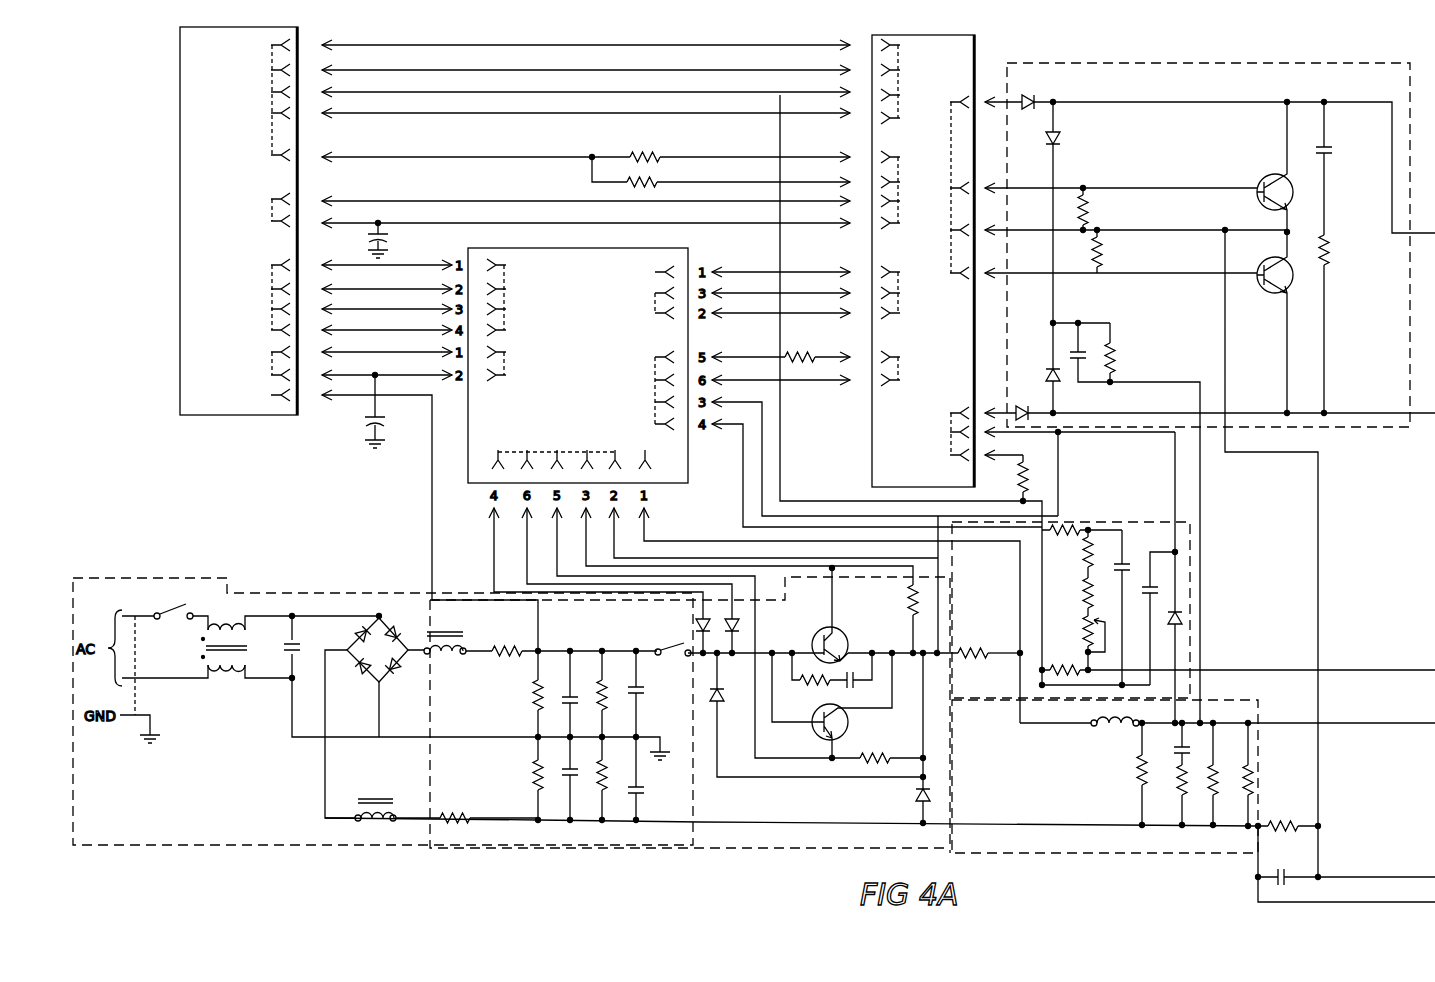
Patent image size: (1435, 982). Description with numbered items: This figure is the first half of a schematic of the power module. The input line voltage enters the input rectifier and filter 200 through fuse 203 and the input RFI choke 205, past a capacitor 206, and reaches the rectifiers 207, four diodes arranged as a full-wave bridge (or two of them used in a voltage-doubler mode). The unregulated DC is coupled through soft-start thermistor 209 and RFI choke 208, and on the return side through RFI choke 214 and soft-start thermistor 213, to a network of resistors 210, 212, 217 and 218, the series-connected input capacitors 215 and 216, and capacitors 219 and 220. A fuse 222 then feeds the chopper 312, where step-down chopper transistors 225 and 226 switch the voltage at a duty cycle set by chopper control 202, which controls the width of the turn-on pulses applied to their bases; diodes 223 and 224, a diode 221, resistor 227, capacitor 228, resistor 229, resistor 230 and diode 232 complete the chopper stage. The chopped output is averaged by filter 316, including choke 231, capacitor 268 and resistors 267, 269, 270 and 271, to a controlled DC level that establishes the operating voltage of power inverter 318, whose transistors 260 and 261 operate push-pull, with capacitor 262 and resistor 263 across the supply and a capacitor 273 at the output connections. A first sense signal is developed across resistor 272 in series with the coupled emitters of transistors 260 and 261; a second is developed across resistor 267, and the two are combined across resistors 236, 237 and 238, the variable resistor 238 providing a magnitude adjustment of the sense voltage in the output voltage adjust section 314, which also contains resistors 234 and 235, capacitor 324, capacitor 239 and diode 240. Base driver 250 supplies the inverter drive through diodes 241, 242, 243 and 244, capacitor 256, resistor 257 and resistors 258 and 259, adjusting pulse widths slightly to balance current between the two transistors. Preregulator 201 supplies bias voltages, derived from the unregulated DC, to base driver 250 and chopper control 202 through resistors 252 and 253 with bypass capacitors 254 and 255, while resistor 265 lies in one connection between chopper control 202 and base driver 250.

The input rectifier and filter 200 is at (127, 577).
The preregulator circuit 201 is at (247, 221).
The chopper control 202 is at (578, 365).
The fuse 203 is at (172, 605).
The input RFI choke 205 is at (230, 672).
The capacitor 206 is at (300, 644).
The rectifiers 207 is at (372, 672).
The RFI choke 208 is at (446, 655).
The soft-start thermistor 209 is at (507, 644).
The resistor 210 is at (531, 693).
The resistor 212 is at (531, 772).
The soft-start thermistor 213 is at (462, 825).
The RFI choke 214 is at (376, 822).
The input capacitor 215 is at (578, 698).
The input capacitor 216 is at (578, 770).
The resistor 217 is at (609, 685).
The resistor 218 is at (609, 775).
The capacitor 219 is at (645, 692).
The capacitor 220 is at (645, 790).
The diode 221 is at (722, 688).
The fuse 222 is at (672, 642).
The diode 223 is at (696, 622).
The diode 224 is at (740, 626).
The step-down chopper transistor 225 is at (812, 630).
The step-down chopper transistor 226 is at (812, 730).
The resistor 227 is at (812, 687).
The capacitor 228 is at (853, 690).
The resistor 229 is at (906, 596).
The resistor 230 is at (970, 646).
The choke 231 is at (1113, 728).
The diode 232 is at (915, 797).
The resistor 234 is at (1016, 478).
The resistor 235 is at (1068, 524).
The resistor 236 is at (1081, 548).
The resistor 237 is at (1081, 588).
The variable resistor 238 is at (1081, 627).
The capacitor 239 is at (1158, 590).
The diode 240 is at (1182, 618).
The diode 241 is at (1028, 394).
The diode 242 is at (1046, 375).
The diode 243 is at (1060, 138).
The diode 244 is at (1030, 94).
The base driver 250 is at (921, 258).
The resistor 252 is at (652, 150).
The resistor 253 is at (650, 177).
The capacitor 254 is at (383, 420).
The capacitor 255 is at (388, 238).
The capacitor 256 is at (1083, 362).
The resistor 257 is at (1117, 352).
The resistor 258 is at (1104, 258).
The resistor 259 is at (1090, 212).
The power inverter transistor 260 is at (1265, 172).
The power inverter transistor 261 is at (1265, 262).
The capacitor 262 is at (1332, 150).
The resistor 263 is at (1331, 246).
The resistor 265 is at (810, 342).
The resistor 267 is at (1135, 772).
The capacitor 268 is at (1174, 751).
The resistor 269 is at (1175, 786).
The resistor 270 is at (1206, 788).
The resistor 271 is at (1255, 782).
The resistor 272 is at (1282, 820).
The capacitor 273 is at (1283, 870).
The chopper 312 is at (1066, 657).
The output voltage adjust 314 is at (1190, 542).
The filter 316 is at (1112, 855).
The power inverter 318 is at (1305, 60).
The capacitor 324 is at (1136, 566).